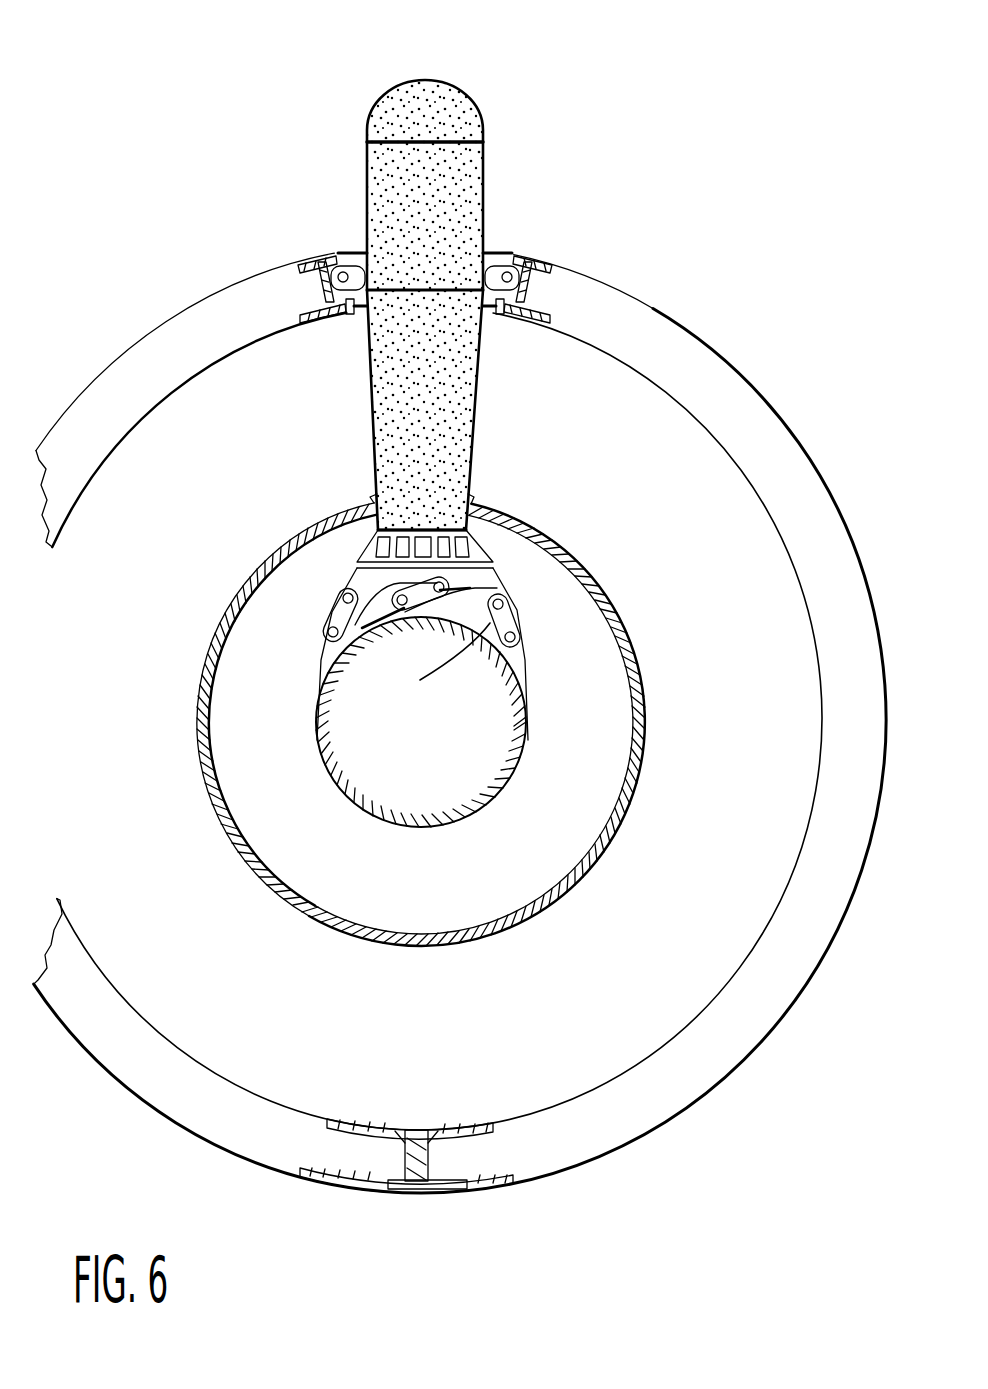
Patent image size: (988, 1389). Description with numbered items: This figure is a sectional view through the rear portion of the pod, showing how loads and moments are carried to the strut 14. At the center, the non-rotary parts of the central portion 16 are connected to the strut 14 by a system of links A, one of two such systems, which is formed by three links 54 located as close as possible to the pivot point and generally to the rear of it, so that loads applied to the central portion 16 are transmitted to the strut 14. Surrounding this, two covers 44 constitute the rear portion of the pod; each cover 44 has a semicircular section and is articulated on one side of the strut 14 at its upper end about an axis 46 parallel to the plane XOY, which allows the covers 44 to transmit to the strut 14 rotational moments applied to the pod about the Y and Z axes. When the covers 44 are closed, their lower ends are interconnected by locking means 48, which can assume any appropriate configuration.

The strut 14 is at (405, 150).
The central portion 16 is at (190, 740).
The cover 44 is at (157, 348).
The axis 46 is at (345, 262).
The locking means 48 is at (413, 1199).
The link 54 is at (483, 623).
The system of links A is at (528, 612).